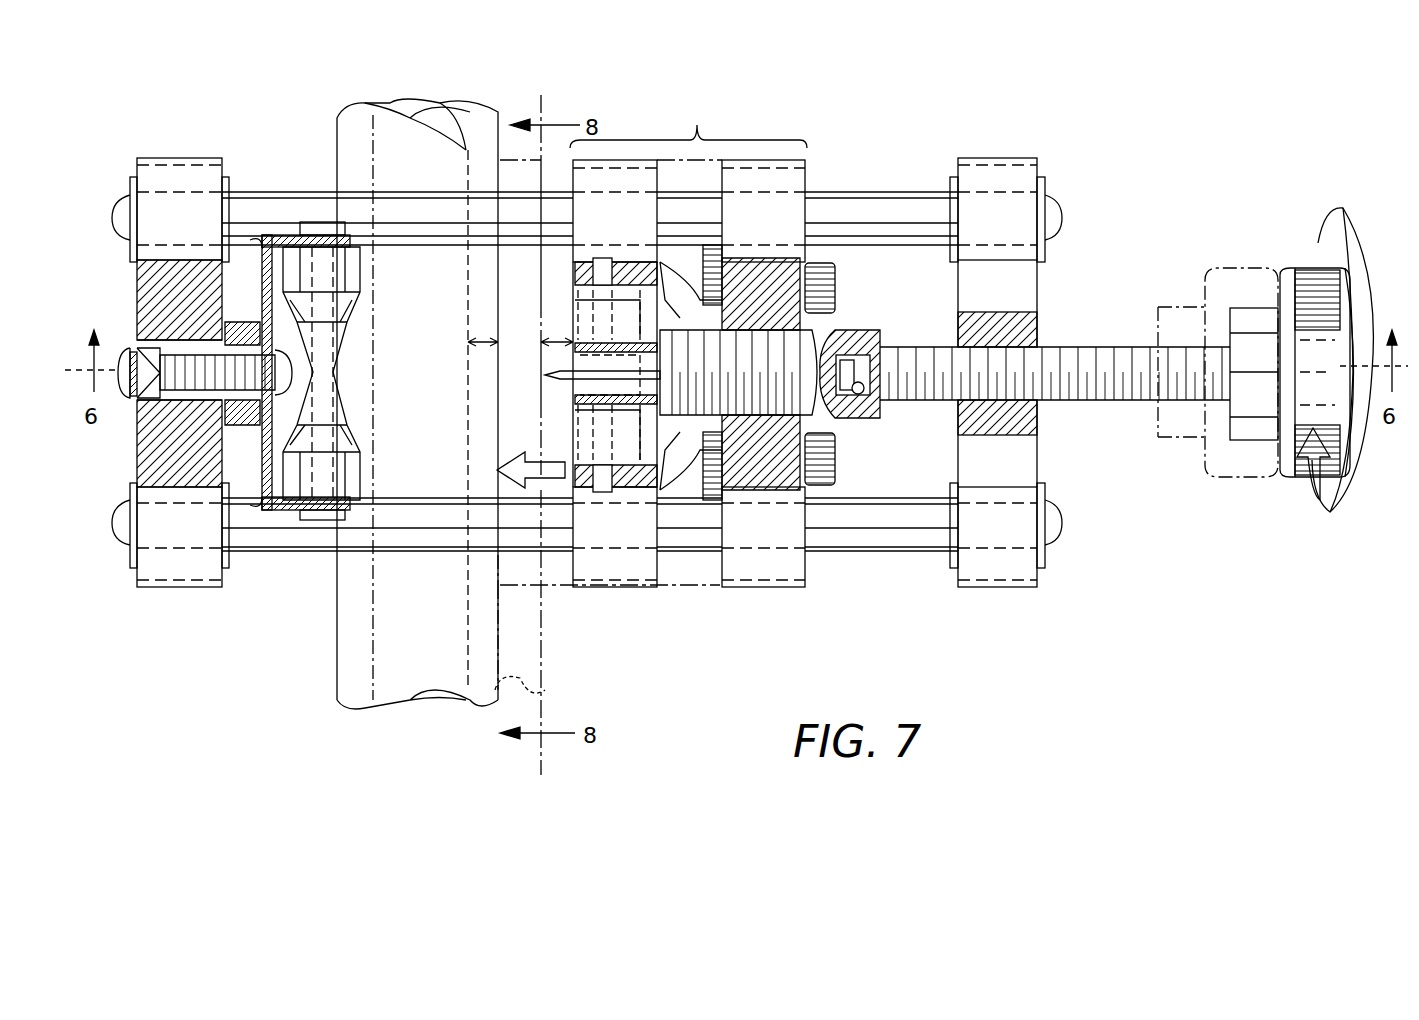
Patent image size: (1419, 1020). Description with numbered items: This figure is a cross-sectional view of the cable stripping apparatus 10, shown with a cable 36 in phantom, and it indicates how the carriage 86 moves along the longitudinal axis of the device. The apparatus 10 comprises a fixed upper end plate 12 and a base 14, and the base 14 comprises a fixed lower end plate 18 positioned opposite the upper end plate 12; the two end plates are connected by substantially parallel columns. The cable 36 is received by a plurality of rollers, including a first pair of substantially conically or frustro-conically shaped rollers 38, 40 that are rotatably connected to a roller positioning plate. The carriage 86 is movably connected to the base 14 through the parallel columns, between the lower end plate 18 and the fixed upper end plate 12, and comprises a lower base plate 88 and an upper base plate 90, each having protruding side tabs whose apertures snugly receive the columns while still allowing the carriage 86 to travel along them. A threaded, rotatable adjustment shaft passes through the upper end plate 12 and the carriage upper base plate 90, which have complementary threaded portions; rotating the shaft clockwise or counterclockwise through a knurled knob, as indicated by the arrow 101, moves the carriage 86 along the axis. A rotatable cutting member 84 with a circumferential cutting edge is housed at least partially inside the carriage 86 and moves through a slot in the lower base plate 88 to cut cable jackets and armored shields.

The cable stripping apparatus 10 is at (1115, 238).
The fixed upper end plate 12 is at (973, 590).
The base 14 is at (186, 600).
The lower end plate 18 is at (148, 590).
The cable 36 is at (536, 652).
The roller 38 is at (290, 265).
The roller 40 is at (262, 520).
The cutting member 84 is at (560, 383).
The carriage 86 is at (828, 178).
The lower base plate 88 is at (618, 590).
The upper base plate 90 is at (758, 590).
The arrow 101 is at (1310, 500).